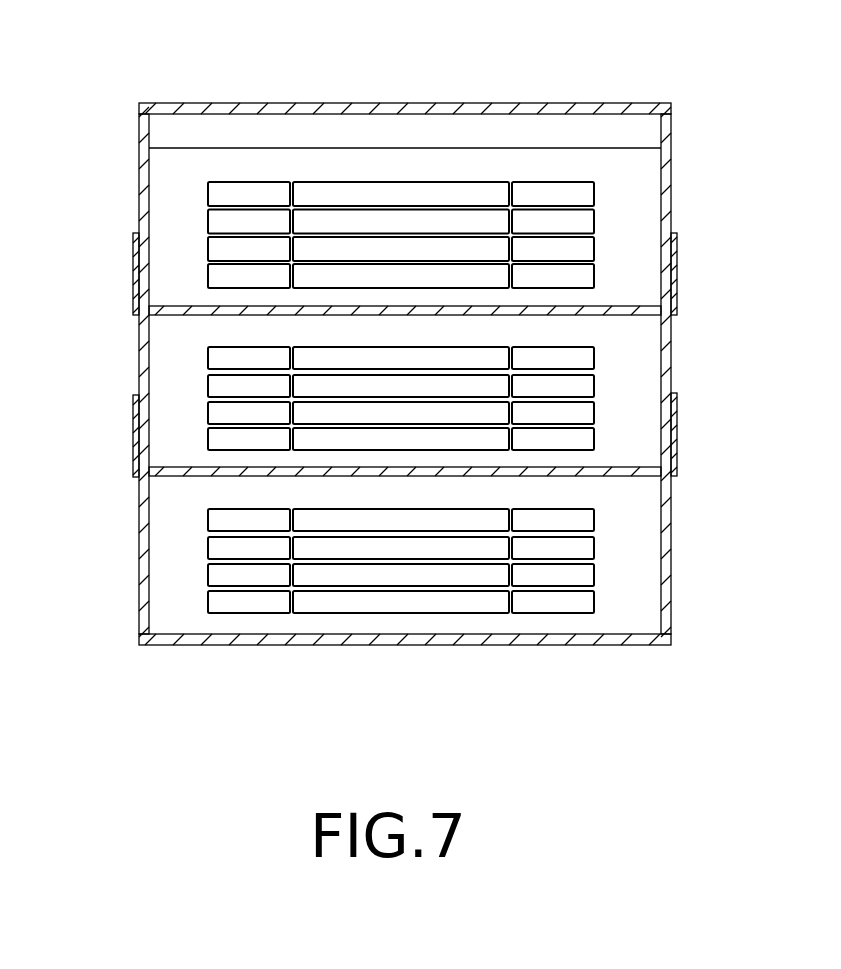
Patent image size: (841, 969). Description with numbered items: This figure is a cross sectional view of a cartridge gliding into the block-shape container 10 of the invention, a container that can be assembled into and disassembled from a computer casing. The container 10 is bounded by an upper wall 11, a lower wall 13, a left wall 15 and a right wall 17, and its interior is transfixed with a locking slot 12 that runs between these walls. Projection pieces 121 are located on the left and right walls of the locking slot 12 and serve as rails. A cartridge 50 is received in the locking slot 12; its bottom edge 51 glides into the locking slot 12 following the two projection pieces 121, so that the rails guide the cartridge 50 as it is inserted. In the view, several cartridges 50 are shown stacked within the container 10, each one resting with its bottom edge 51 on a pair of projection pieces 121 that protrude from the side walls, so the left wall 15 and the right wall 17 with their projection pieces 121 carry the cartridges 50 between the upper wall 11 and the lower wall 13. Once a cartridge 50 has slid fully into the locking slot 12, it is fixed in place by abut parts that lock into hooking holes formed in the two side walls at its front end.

The block-shape container 10 is at (410, 356).
The upper wall 11 is at (572, 102).
The locking slot 12 is at (323, 135).
The lower wall 13 is at (394, 641).
The left wall 15 is at (140, 508).
The right wall 17 is at (672, 143).
The cartridge 50 is at (645, 225).
The bottom edge 51 is at (644, 304).
The projection pieces 121 is at (160, 305).